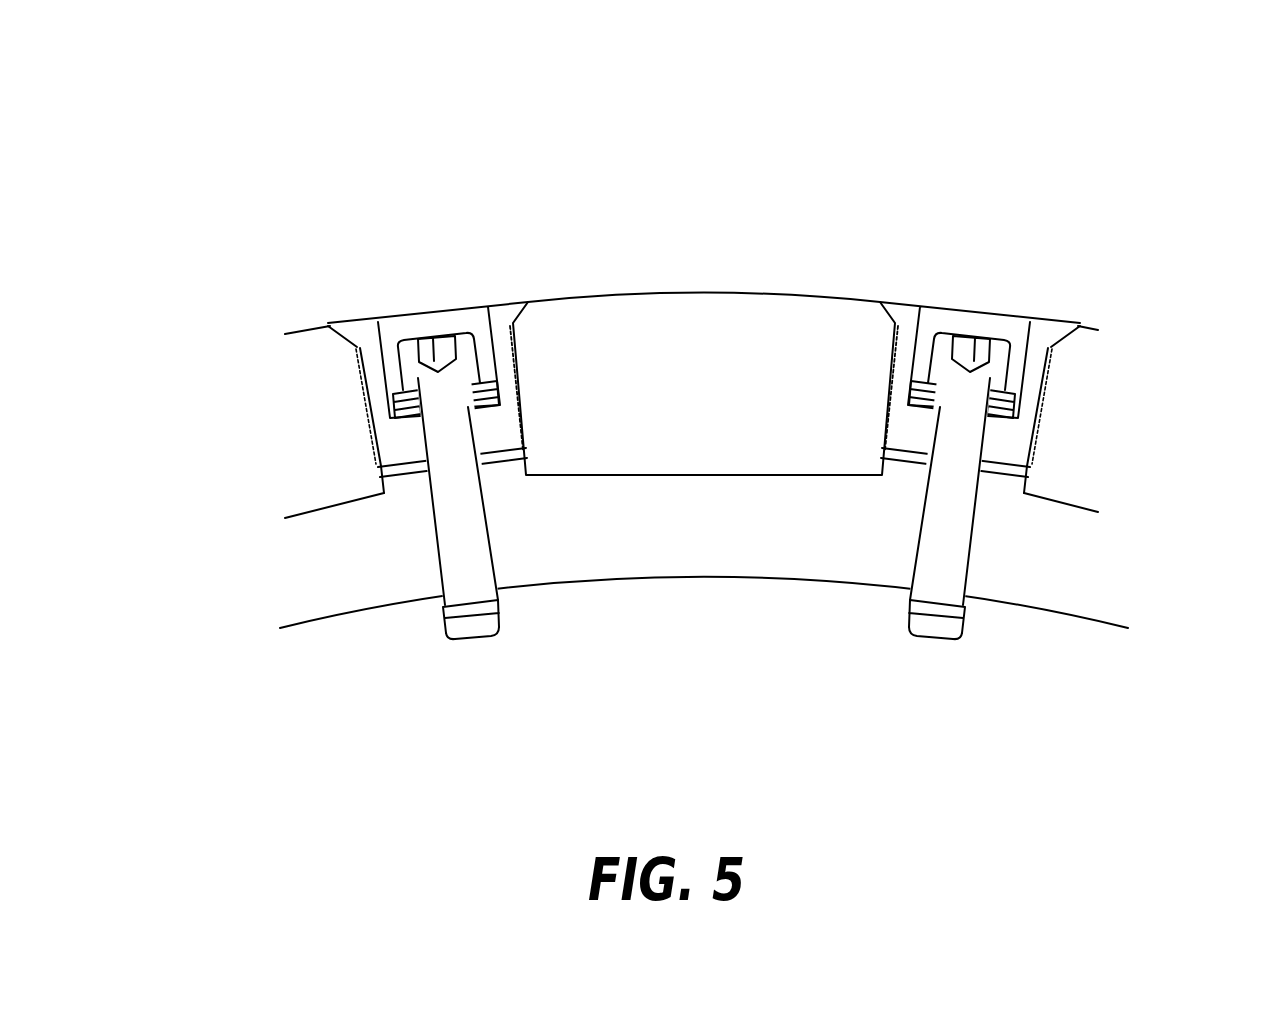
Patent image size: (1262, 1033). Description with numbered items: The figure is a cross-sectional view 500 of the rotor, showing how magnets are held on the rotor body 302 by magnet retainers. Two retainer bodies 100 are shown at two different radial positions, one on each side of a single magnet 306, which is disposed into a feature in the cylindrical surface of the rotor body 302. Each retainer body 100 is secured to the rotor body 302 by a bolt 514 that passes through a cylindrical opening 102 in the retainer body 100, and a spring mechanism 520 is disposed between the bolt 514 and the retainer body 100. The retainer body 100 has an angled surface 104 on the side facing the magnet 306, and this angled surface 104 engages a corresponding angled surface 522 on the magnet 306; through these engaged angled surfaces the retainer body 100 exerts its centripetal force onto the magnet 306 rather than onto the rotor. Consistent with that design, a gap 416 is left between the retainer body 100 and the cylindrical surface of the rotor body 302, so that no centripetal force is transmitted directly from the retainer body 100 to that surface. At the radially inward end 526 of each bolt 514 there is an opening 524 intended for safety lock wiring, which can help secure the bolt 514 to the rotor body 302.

The cross-sectional view 500 is at (272, 142).
The retainer body 100 is at (352, 320).
The openings 102 is at (425, 323).
The angled surfaces 104 is at (527, 315).
The rotor body 302 is at (711, 578).
The magnet 306 is at (704, 384).
The gap 416 is at (403, 470).
The bolts 514 is at (447, 528).
The spring mechanisms 520 is at (395, 402).
The angled surfaces 522 is at (534, 298).
The openings 524 is at (463, 611).
The radially inward ends 526 is at (473, 641).